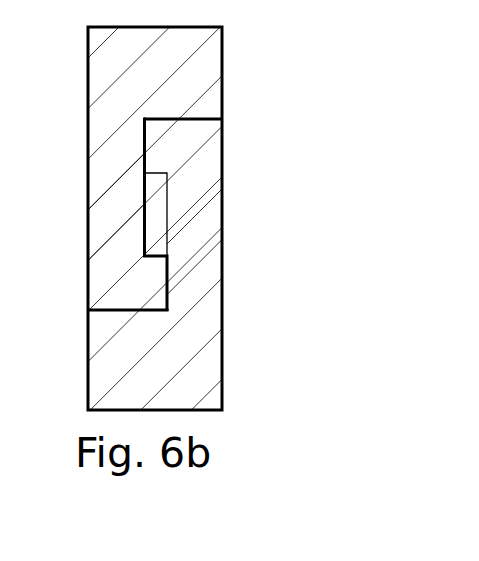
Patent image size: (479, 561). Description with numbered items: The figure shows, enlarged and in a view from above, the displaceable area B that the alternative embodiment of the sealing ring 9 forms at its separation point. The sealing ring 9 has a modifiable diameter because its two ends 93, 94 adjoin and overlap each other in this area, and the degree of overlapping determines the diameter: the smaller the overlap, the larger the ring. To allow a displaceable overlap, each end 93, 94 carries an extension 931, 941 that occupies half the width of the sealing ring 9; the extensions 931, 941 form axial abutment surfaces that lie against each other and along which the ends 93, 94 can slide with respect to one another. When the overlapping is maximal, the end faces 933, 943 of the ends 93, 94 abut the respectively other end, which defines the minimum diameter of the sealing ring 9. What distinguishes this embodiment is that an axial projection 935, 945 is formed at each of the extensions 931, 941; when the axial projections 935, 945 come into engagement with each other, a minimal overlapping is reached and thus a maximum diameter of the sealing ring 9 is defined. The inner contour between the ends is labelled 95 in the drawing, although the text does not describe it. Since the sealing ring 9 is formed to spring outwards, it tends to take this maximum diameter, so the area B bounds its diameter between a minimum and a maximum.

The sealing ring 9 is at (88, 59).
The end of the sealing ring 93 is at (207, 55).
The end of the sealing ring 94 is at (192, 368).
The channel 95 is at (153, 198).
The extension 931 is at (104, 222).
The end face 933 is at (107, 315).
The axial projection 935 is at (148, 285).
The extension 941 is at (208, 249).
The end face 943 is at (204, 113).
The axial projection 945 is at (165, 155).
The displaceable area B is at (245, 144).